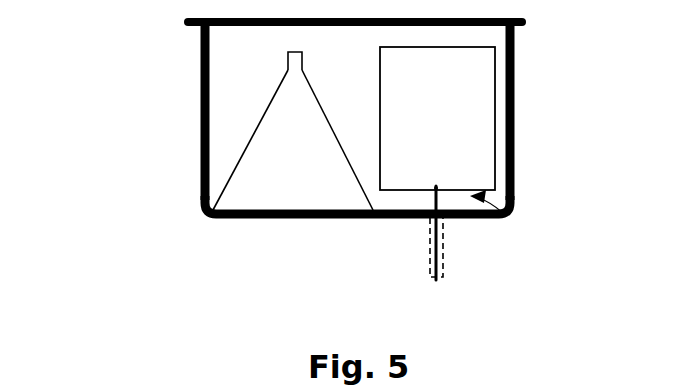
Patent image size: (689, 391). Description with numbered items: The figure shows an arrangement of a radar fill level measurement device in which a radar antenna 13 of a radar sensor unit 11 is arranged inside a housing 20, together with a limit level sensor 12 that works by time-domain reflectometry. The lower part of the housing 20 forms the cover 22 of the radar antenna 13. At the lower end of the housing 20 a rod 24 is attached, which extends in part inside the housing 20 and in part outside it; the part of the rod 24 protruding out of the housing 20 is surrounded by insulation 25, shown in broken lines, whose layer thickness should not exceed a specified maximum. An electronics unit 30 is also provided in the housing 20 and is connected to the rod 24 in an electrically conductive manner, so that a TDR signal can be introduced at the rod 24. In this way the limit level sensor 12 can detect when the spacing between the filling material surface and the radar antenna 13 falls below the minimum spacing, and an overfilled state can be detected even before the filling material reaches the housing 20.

The radar sensor unit 11 is at (201, 112).
The limit level sensor 12 is at (505, 215).
The radar antenna 13 is at (276, 138).
The housing 20 is at (515, 137).
The cover 22 is at (285, 218).
The rod 24 is at (440, 250).
The insulation 25 is at (437, 281).
The electronics unit 30 is at (463, 80).